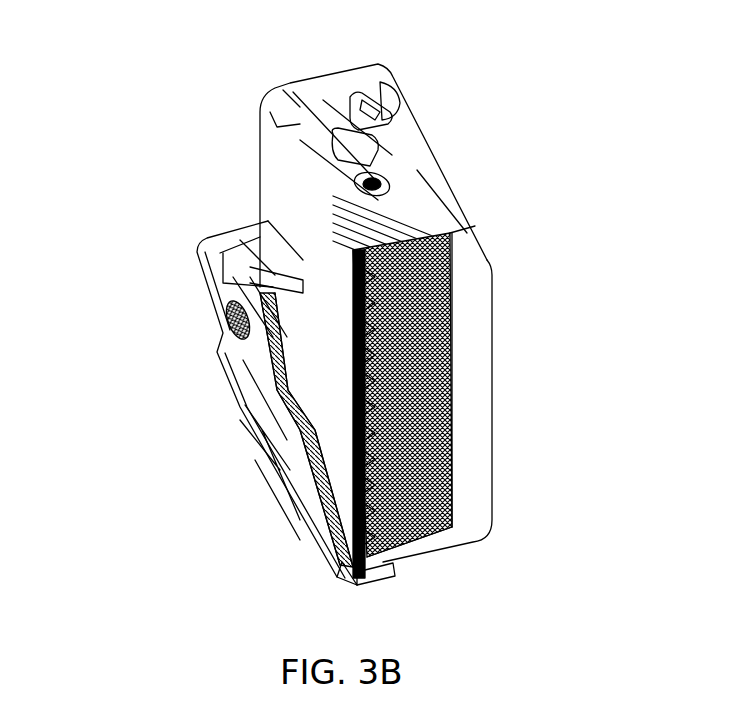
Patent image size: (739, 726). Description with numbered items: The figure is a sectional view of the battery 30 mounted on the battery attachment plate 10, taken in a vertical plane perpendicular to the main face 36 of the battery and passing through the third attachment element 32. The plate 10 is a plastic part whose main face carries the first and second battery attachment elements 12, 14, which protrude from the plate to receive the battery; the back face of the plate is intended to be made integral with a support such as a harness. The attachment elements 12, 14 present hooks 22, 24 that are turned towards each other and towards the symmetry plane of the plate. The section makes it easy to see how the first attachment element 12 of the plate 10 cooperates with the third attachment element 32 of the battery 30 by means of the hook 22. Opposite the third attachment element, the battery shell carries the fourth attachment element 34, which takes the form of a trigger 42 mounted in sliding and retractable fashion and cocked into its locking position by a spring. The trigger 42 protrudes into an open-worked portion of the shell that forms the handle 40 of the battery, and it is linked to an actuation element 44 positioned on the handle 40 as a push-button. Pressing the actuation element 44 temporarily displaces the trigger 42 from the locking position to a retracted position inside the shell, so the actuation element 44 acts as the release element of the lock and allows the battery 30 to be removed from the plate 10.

The battery attachment plate 10 is at (198, 336).
The first battery attachment element 12 is at (340, 580).
The second battery attachment element 14 is at (233, 234).
The hook 22 is at (385, 572).
The hook 24 is at (303, 290).
The battery 30 is at (505, 334).
The third attachment element 32 is at (380, 558).
The fourth attachment element 34 is at (343, 200).
The main face of the battery 36 is at (327, 343).
The handle 40 is at (313, 127).
The trigger 42 is at (343, 208).
The actuation element 44 is at (372, 140).